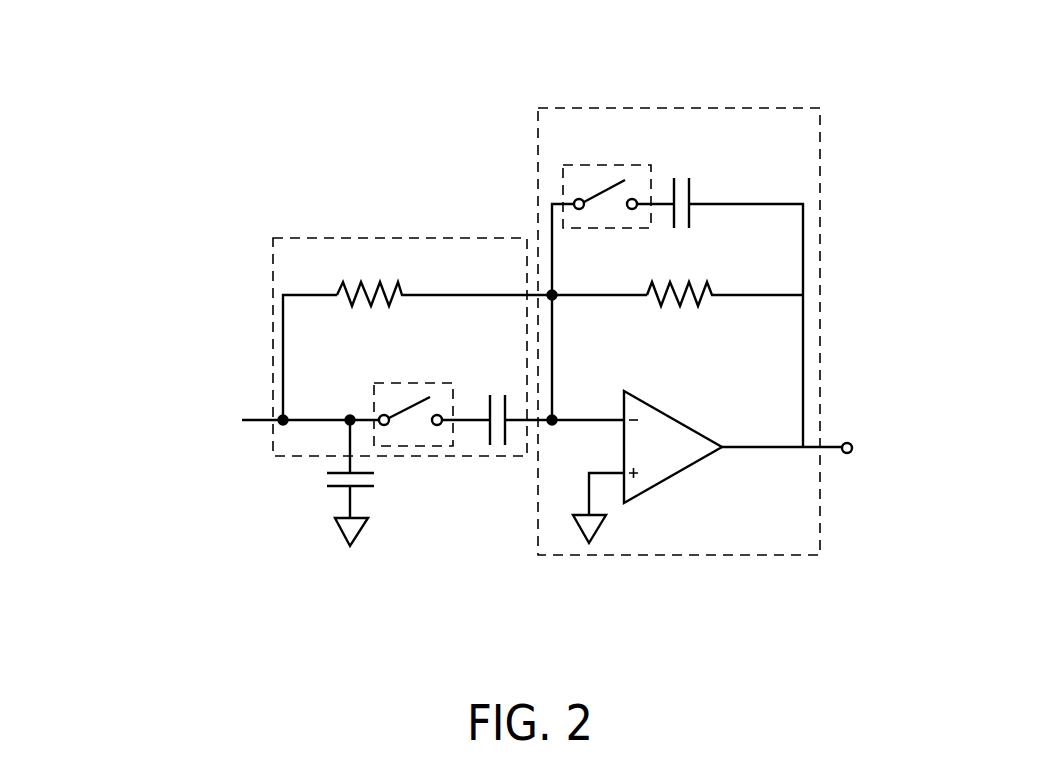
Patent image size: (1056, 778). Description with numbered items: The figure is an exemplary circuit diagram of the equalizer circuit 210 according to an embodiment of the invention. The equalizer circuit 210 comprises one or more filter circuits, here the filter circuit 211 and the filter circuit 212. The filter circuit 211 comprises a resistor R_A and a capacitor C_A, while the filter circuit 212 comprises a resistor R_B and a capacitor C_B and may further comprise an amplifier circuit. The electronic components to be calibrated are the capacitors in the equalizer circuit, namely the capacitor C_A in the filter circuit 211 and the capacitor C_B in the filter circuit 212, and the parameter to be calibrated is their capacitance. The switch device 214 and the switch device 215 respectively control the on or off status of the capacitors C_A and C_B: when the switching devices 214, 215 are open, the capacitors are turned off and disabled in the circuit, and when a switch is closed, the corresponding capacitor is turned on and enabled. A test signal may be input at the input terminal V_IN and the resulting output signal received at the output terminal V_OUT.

The equalizer circuit 210 is at (888, 88).
The filter circuit 211 is at (453, 238).
The filter circuit 212 is at (773, 107).
The switch device 214 is at (402, 380).
The switch device 215 is at (635, 165).